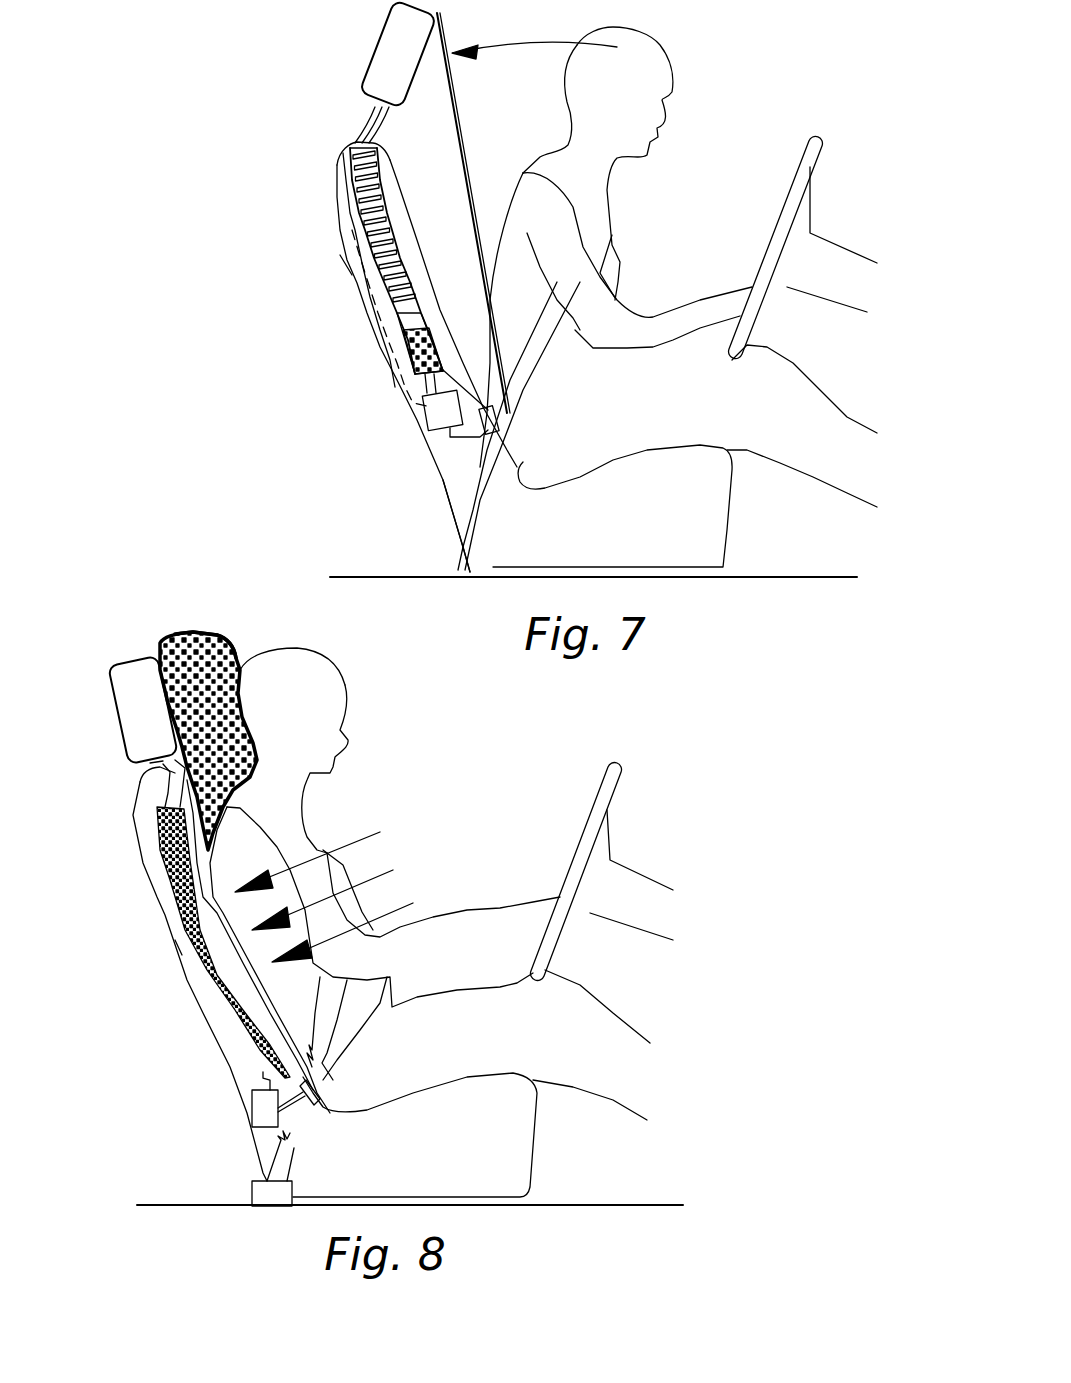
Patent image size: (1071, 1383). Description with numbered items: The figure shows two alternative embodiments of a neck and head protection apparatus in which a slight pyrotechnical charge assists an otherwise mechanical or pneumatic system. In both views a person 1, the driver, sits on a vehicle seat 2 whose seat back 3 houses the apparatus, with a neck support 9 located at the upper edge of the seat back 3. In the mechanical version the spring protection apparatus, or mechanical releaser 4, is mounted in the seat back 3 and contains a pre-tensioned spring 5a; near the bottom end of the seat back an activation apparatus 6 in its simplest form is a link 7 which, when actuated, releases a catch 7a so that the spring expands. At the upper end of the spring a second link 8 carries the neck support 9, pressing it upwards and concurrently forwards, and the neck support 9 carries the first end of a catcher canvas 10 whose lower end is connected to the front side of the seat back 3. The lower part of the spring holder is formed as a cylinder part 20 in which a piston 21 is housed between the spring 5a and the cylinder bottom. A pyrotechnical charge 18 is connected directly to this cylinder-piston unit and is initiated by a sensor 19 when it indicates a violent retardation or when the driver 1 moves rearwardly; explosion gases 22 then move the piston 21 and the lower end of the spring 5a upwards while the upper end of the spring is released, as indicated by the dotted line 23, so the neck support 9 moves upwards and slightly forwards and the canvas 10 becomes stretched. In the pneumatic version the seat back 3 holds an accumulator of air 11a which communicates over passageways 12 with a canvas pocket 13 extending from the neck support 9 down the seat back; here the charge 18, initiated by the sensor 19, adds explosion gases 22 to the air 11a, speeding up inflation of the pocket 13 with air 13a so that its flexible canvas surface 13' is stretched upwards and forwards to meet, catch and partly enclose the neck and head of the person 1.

In FIG. 7, the person 1 is at (583, 203).
In FIG. 8, the person 1 is at (293, 697).
In FIG. 7, the seat 2 is at (648, 531).
In FIG. 8, the seat 2 is at (440, 1161).
In FIG. 7, the seat back 3 is at (378, 347).
In FIG. 8, the seat back 3 is at (200, 1015).
In FIG. 7, the mechanical releaser 4 is at (340, 268).
In FIG. 8, the mechanical releaser 4 is at (170, 952).
In FIG. 7, the spring 5a is at (365, 187).
In FIG. 7, the activation apparatus 6 is at (473, 472).
In FIG. 7, the link 7 is at (450, 433).
In FIG. 7, the catch 7a is at (363, 229).
In FIG. 7, the second link 8 is at (363, 125).
In FIG. 7, the neck support 9 is at (390, 55).
In FIG. 8, the neck support 9 is at (140, 725).
In FIG. 7, the catcher canvas 10 is at (455, 125).
In FIG. 8, the air 11a is at (175, 838).
In FIG. 8, the passageways 12 is at (163, 790).
In FIG. 8, the canvas pocket 13 is at (151, 734).
In FIG. 8, the air 13a is at (203, 657).
In FIG. 8, the flexible canvas surface 13' is at (295, 653).
In FIG. 7, the pyrotechnical charge 18 is at (440, 410).
In FIG. 8, the pyrotechnical charge 18 is at (267, 1108).
In FIG. 7, the sensor 19 is at (503, 440).
In FIG. 8, the sensor 19 is at (305, 1087).
In FIG. 7, the cylinder part 20 is at (405, 360).
In FIG. 7, the piston 21 is at (412, 317).
In FIG. 7, the explosion gases 22 is at (443, 368).
In FIG. 8, the explosion gases 22 is at (265, 1048).
In FIG. 7, the dotted line 23 is at (370, 299).